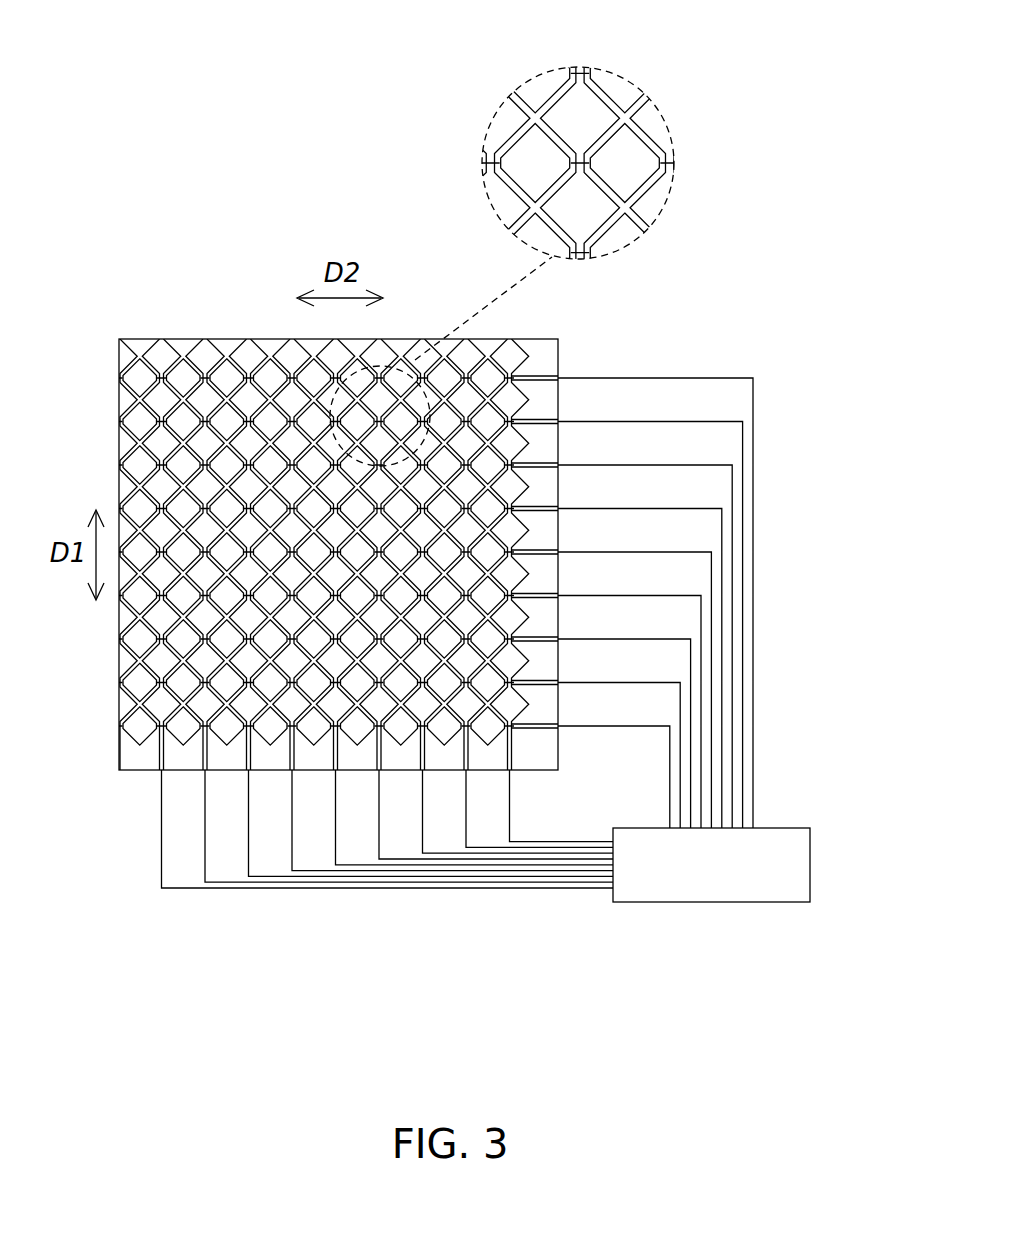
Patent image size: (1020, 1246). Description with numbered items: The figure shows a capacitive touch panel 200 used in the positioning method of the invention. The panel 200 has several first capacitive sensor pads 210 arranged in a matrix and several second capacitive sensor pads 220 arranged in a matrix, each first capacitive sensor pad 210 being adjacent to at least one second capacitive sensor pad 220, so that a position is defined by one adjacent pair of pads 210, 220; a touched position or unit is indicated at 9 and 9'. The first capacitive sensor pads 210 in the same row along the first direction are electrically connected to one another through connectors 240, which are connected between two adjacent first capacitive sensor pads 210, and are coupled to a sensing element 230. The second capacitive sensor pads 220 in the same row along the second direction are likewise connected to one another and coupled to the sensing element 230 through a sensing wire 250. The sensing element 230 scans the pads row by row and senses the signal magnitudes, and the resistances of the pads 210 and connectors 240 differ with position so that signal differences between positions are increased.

The capacitive touch panel 200 is at (108, 284).
The touch sensing unit 9 is at (476, 440).
The touch sensing unit 9' is at (338, 524).
The first capacitive sensor pad 210 is at (568, 112).
The second capacitive sensor pad 220 is at (525, 153).
The connector 240 is at (565, 165).
The sensing wire 250 is at (727, 375).
The sensing element 230 is at (712, 903).